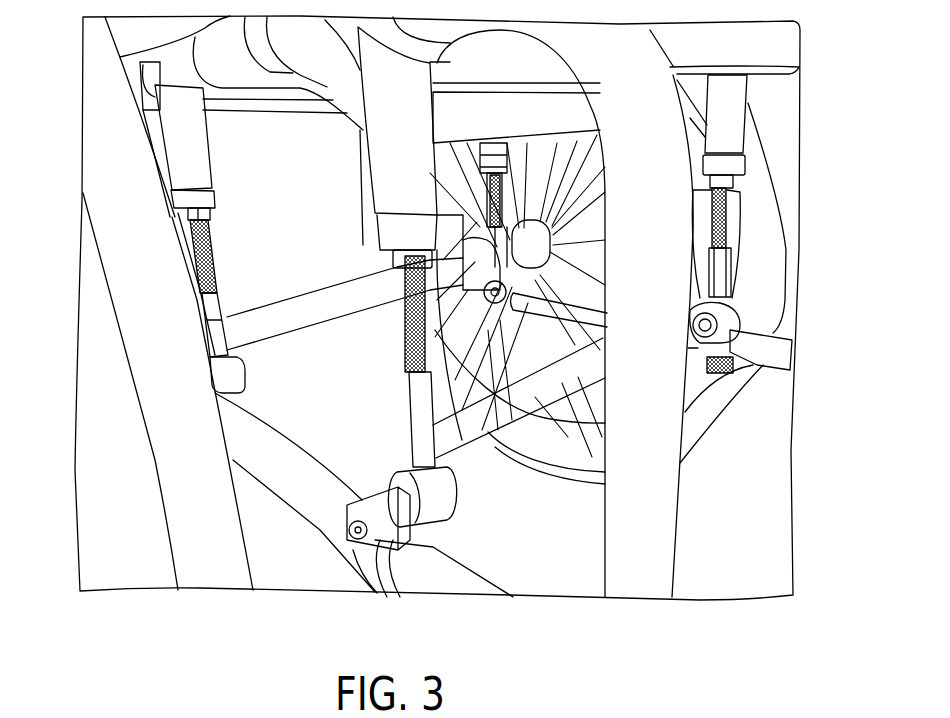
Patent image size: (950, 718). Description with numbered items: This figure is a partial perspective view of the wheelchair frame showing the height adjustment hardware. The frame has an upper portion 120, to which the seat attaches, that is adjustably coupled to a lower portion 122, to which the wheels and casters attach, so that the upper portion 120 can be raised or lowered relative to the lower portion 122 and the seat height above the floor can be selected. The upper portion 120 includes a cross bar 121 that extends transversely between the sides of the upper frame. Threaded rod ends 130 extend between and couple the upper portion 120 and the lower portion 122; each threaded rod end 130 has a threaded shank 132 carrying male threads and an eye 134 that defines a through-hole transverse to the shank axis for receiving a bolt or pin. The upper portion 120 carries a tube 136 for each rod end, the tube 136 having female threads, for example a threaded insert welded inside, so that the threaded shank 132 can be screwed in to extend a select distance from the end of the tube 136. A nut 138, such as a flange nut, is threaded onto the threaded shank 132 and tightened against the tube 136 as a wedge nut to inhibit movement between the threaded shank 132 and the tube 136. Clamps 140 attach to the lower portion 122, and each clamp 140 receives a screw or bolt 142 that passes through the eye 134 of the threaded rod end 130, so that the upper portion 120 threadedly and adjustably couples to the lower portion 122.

The upper portion 120 is at (165, 70).
The cross bar 121 is at (457, 127).
The lower portion 122 is at (302, 465).
The threaded rod end 130 is at (418, 402).
The threaded shank 132 is at (407, 337).
The eye 134 is at (487, 474).
The tube 136 is at (393, 183).
The nut 138 is at (390, 260).
The clamp 140 is at (373, 573).
The screw or bolt 142 is at (350, 528).